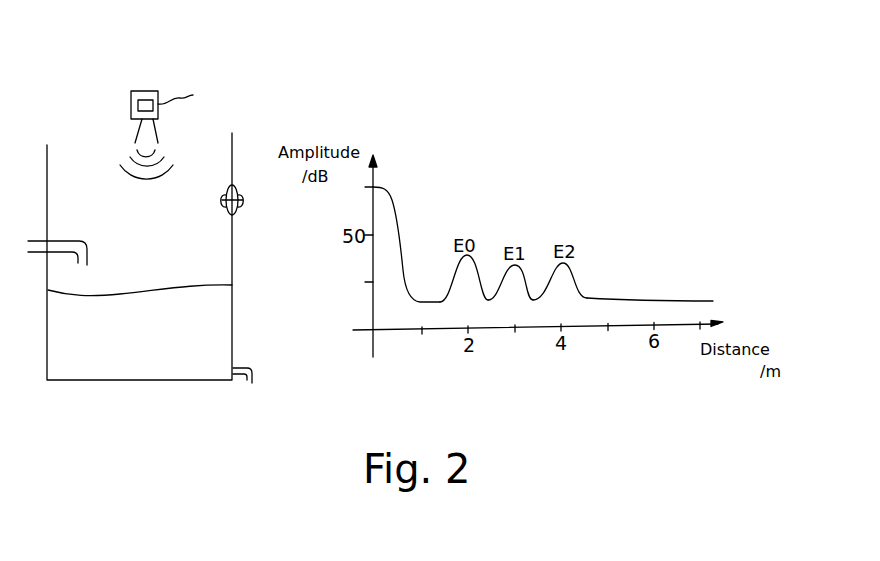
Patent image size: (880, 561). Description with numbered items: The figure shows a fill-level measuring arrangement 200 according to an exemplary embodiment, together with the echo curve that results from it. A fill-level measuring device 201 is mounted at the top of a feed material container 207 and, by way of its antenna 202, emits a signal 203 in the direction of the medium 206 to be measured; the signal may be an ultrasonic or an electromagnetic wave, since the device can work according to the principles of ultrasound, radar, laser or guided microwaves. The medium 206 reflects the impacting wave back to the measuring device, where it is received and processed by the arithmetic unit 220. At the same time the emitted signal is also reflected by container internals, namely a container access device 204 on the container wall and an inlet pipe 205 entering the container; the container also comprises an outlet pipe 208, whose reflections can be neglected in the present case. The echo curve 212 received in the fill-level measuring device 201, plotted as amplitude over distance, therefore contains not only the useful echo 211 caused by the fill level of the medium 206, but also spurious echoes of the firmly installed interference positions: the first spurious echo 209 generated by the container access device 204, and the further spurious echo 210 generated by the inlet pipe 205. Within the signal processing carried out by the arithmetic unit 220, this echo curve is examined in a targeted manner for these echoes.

The fill-level measuring arrangement 200 is at (212, 92).
The fill-level measuring device 201 is at (143, 92).
The antenna 202 is at (135, 133).
The signal 203 is at (133, 160).
The container access device 204 is at (227, 192).
The inlet pipe 205 is at (65, 238).
The medium 206 is at (142, 287).
The feed material container 207 is at (107, 383).
The outlet pipe 208 is at (242, 363).
The spurious echo E0 209 is at (465, 227).
The spurious echo E1 210 is at (515, 225).
The useful echo E2 211 is at (567, 223).
The echo curve 212 is at (647, 295).
The arithmetic unit 220 is at (137, 93).